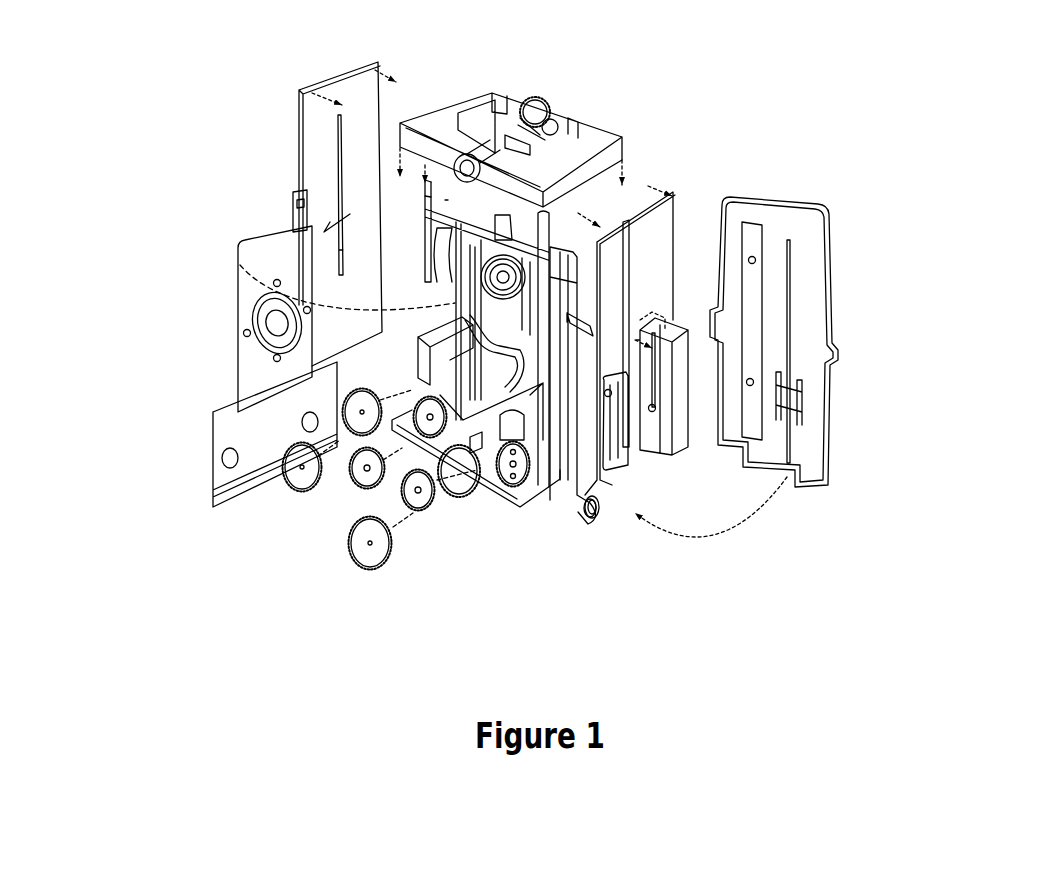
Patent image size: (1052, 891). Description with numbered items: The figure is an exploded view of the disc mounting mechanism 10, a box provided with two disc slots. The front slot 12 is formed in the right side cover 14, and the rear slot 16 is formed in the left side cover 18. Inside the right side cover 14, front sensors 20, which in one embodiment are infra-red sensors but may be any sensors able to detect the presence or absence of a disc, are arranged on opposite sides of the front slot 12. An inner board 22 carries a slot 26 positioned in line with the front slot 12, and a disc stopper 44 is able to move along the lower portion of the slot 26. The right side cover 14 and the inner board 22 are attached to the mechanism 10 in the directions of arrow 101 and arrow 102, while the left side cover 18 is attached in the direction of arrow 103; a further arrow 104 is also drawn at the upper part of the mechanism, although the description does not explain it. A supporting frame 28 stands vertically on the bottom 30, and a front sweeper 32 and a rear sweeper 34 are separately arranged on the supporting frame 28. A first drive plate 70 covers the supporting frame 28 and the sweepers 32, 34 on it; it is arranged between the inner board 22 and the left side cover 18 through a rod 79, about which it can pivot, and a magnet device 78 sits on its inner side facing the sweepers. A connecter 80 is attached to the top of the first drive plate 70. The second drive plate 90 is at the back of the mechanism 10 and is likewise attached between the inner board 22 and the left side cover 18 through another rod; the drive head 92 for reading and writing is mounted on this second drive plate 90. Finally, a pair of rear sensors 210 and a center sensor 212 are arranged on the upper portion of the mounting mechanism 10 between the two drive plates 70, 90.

The disc mounting mechanism 10 is at (733, 78).
The front slot 12 is at (793, 327).
The right side cover 14 is at (810, 263).
The rear slot 16 is at (333, 203).
The left side cover 18 is at (340, 77).
The front sensors 20 is at (800, 392).
The inner board 22 is at (677, 198).
The slot 26 is at (630, 307).
The supporting frame 28 is at (517, 447).
The bottom 30 is at (520, 503).
The front sweeper 32 is at (357, 440).
The rear sweeper 34 is at (423, 438).
The disc stopper 44 is at (645, 423).
The first drive plate 70 is at (257, 253).
The magnet device 78 is at (275, 335).
The rod 79 is at (210, 505).
The connecter 80 is at (288, 207).
The second drive plate 90 is at (563, 415).
The drive head 92 is at (503, 275).
The arrow 101 is at (770, 513).
The arrow 102 is at (643, 183).
The arrow 103 is at (397, 83).
The top tray 104 is at (580, 207).
The rear sensors 210 is at (445, 190).
The center sensor 212 is at (502, 213).